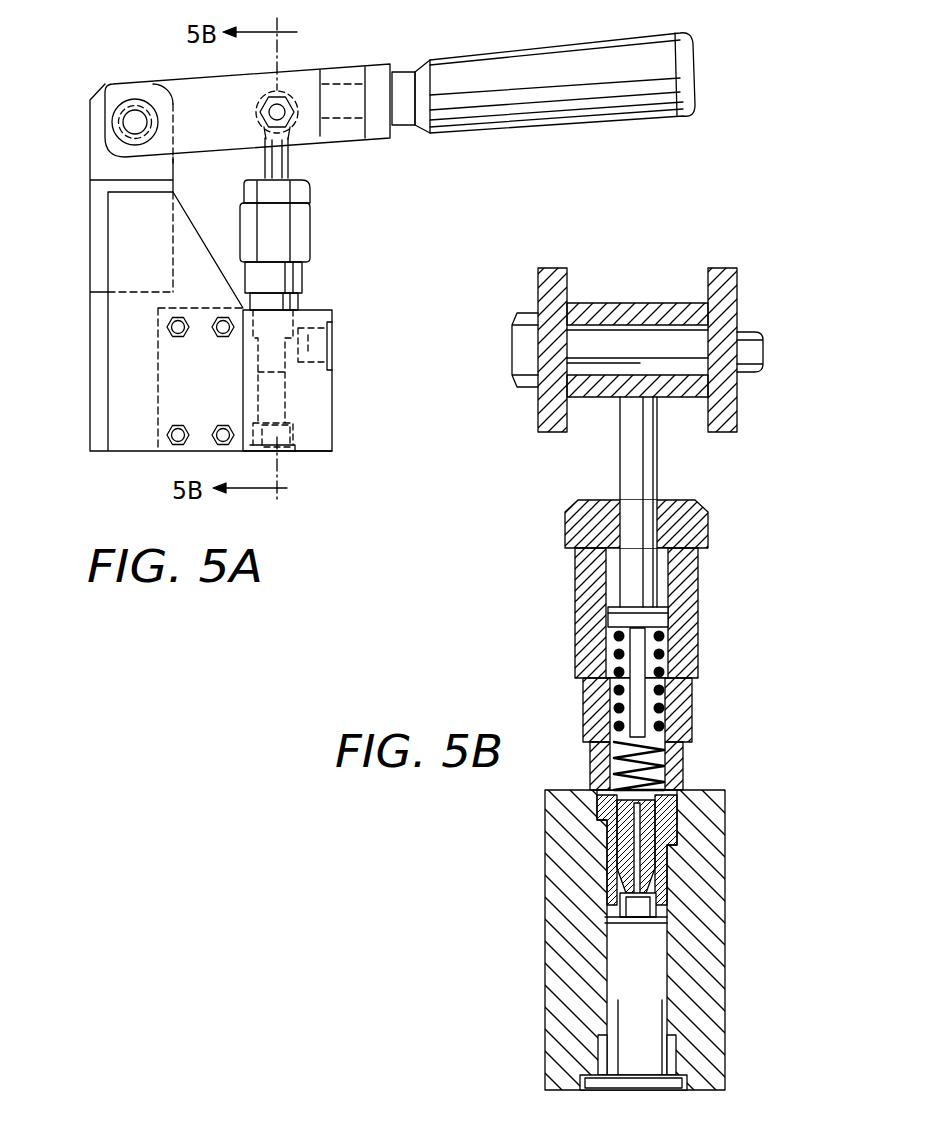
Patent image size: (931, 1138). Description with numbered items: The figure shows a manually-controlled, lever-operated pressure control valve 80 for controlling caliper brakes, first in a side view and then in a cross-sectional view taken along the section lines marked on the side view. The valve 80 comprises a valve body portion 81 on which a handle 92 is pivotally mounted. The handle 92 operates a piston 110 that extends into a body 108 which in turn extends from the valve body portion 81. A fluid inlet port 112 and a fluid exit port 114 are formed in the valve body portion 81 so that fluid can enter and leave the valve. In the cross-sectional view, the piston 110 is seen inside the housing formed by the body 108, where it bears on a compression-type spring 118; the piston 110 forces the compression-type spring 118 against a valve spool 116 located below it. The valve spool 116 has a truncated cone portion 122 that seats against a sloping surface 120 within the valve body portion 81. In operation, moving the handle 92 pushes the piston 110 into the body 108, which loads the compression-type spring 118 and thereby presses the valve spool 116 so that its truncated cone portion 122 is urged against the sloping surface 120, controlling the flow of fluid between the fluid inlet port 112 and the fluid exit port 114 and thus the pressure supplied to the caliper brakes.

In FIG. 5A, the lever-operated valve 80 is at (74, 60).
In FIG. 5B, the lever-operated valve 80 is at (522, 549).
In FIG. 5A, the valve body portion 81 is at (332, 418).
In FIG. 5A, the handle 92 is at (550, 55).
In FIG. 5B, the handle 92 is at (737, 292).
In FIG. 5A, the body 108 is at (311, 233).
In FIG. 5B, the body 108 is at (700, 612).
In FIG. 5A, the piston 110 is at (288, 163).
In FIG. 5B, the piston 110 is at (657, 472).
In FIG. 5A, the fluid inlet port 112 is at (283, 455).
In FIG. 5B, the fluid inlet port 112 is at (635, 1082).
In FIG. 5A, the fluid exit port 114 is at (330, 348).
In FIG. 5B, the valve spool 116 is at (655, 842).
In FIG. 5B, the compression-type spring 118 is at (692, 710).
In FIG. 5B, the sloping surface 120 is at (653, 880).
In FIG. 5B, the truncated cone portion 122 is at (648, 893).